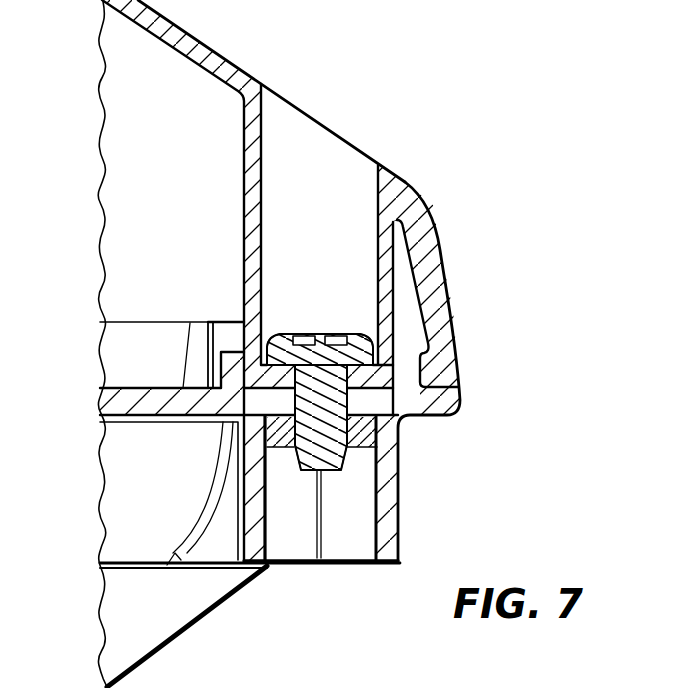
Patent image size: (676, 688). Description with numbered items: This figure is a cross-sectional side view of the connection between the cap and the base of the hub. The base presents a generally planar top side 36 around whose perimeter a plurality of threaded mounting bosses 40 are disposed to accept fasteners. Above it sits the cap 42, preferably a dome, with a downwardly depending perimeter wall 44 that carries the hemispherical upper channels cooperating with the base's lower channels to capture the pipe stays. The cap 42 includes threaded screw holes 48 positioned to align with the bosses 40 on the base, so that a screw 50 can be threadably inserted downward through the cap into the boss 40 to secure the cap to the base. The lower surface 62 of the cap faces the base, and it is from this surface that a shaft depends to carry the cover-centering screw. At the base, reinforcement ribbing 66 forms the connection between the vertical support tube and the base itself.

The top side 36 is at (422, 402).
The threaded mounting boss 40 is at (337, 548).
The cap 42 is at (213, 57).
The perimeter wall 44 is at (460, 310).
The threaded screw hole 48 is at (314, 140).
The screw 50 is at (312, 325).
The lower surface 62 is at (124, 28).
The reinforcement ribbing 66 is at (110, 618).